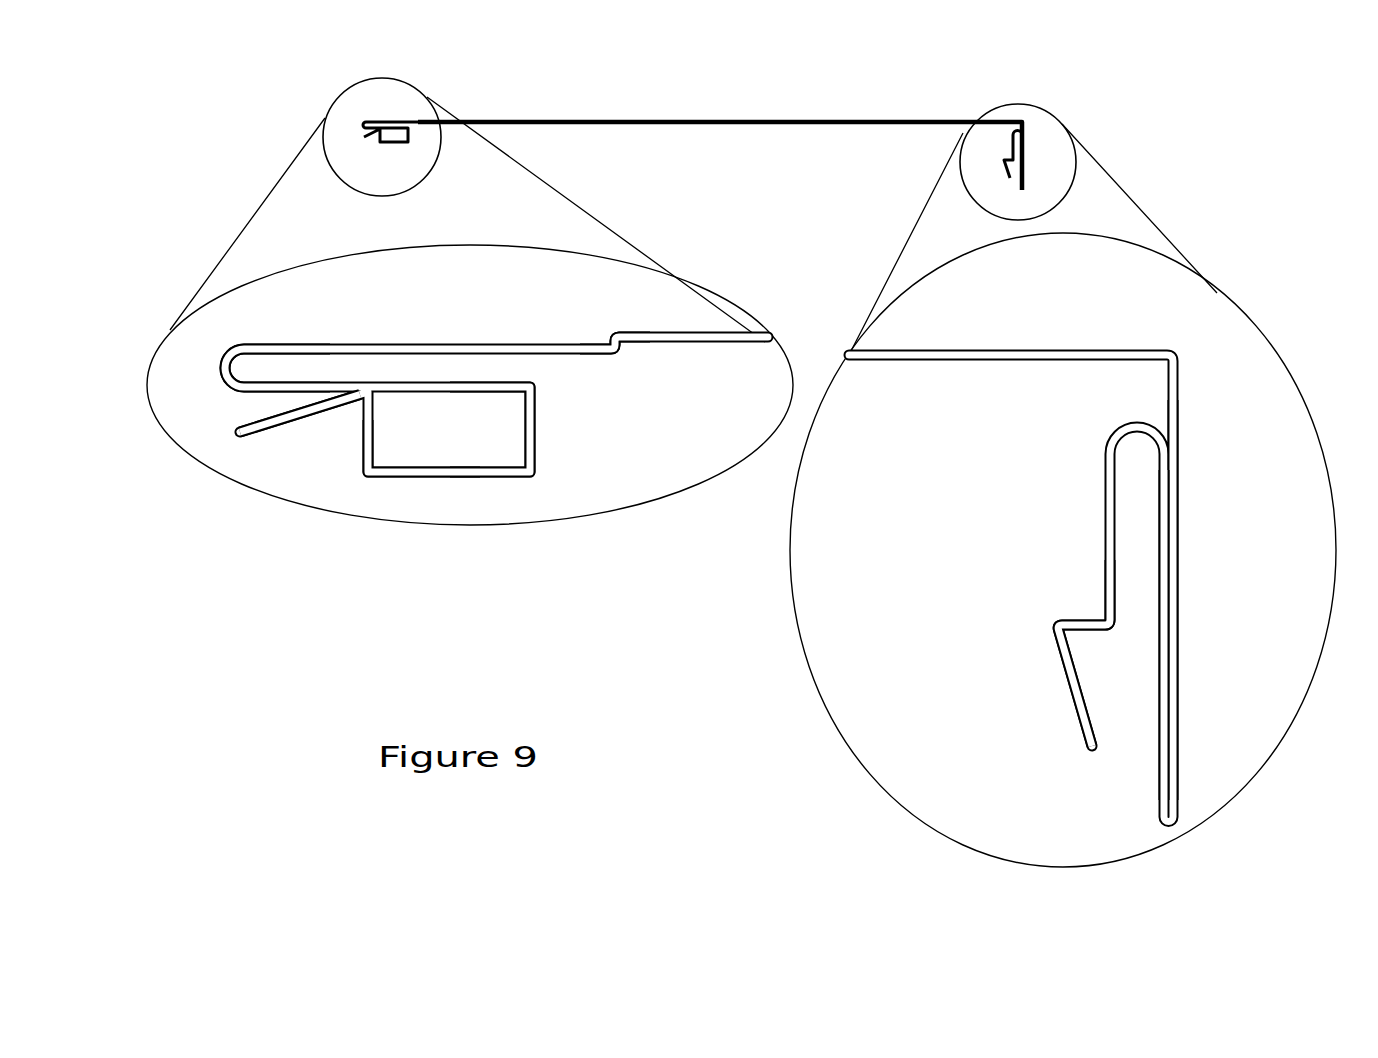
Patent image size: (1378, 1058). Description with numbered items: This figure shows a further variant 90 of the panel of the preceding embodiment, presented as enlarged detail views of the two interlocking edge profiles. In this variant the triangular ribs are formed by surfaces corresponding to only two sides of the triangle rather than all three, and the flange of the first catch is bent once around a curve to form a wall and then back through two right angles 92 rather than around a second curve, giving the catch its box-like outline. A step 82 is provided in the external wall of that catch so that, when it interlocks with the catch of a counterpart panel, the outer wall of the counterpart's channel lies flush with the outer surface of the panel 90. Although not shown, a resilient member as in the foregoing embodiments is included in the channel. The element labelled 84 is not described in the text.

The panel 90 is at (821, 119).
The step 82 is at (617, 339).
The right angles 92 is at (536, 433).
The vertical wall 84 is at (1171, 566).